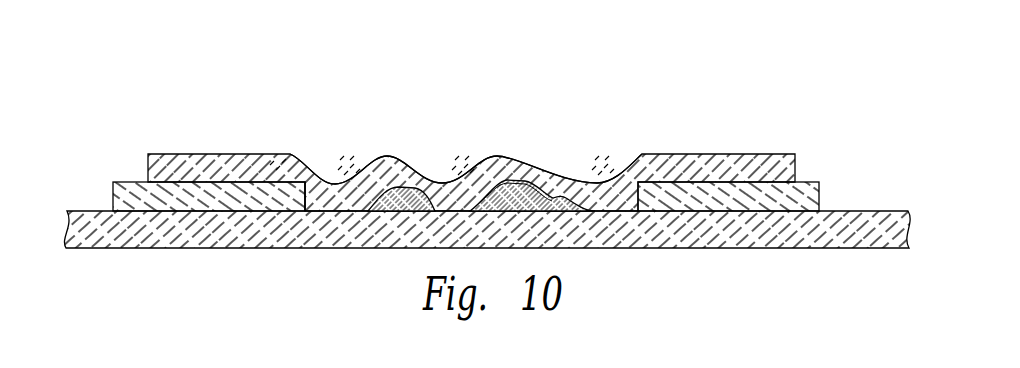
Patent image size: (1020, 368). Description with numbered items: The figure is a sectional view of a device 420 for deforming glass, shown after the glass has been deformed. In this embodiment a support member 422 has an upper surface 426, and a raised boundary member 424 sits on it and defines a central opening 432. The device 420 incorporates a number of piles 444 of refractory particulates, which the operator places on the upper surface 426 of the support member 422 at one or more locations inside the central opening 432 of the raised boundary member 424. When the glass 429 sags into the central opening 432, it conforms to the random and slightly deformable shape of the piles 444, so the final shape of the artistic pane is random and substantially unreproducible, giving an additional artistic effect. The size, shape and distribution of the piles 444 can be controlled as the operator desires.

The device 420 is at (83, 176).
The glass 429 is at (177, 153).
The upper surface 426 is at (306, 190).
The support member 422 is at (372, 210).
The piles 444 is at (397, 187).
The central opening 432 is at (628, 207).
The raised boundary member 424 is at (728, 154).